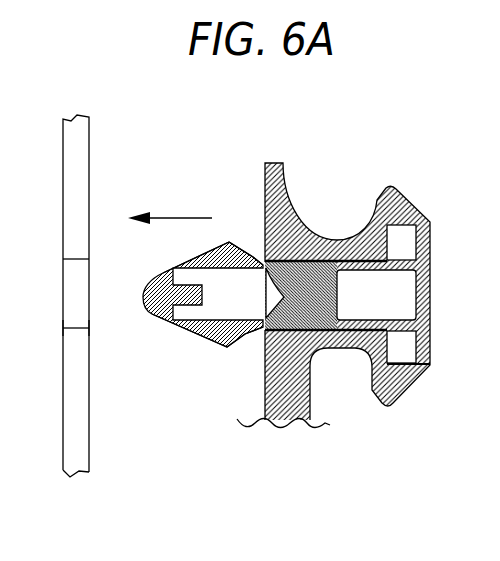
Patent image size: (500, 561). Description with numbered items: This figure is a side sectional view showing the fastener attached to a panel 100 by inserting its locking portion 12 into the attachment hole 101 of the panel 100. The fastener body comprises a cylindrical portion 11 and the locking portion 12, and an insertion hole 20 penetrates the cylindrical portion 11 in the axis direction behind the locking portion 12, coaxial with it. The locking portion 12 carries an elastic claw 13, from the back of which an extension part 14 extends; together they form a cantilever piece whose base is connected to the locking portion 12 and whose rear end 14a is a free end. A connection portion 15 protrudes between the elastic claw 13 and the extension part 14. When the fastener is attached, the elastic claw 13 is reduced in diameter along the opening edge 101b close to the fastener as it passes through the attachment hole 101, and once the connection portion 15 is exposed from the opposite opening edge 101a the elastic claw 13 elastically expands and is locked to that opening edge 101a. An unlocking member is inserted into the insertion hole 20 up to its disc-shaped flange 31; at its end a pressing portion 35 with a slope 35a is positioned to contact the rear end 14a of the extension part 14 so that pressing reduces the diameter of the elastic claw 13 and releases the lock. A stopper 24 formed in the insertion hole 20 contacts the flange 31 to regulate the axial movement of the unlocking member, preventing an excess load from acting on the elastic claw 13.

The cylindrical portion 11 is at (391, 188).
The locking portion 12 is at (151, 315).
The elastic claw 13 is at (195, 252).
The extension part 14 is at (240, 251).
The rear end 14a is at (253, 328).
The connection portion 15 is at (228, 349).
The insertion hole 20 is at (398, 244).
The stopper 24 is at (393, 351).
The flange 31 is at (430, 301).
The pressing portion 35 is at (292, 329).
The slope 35a is at (264, 264).
The panel 100 is at (82, 443).
The attachment hole 101 is at (80, 296).
The opening edge 101a is at (68, 328).
The opening edge 101b is at (93, 327).